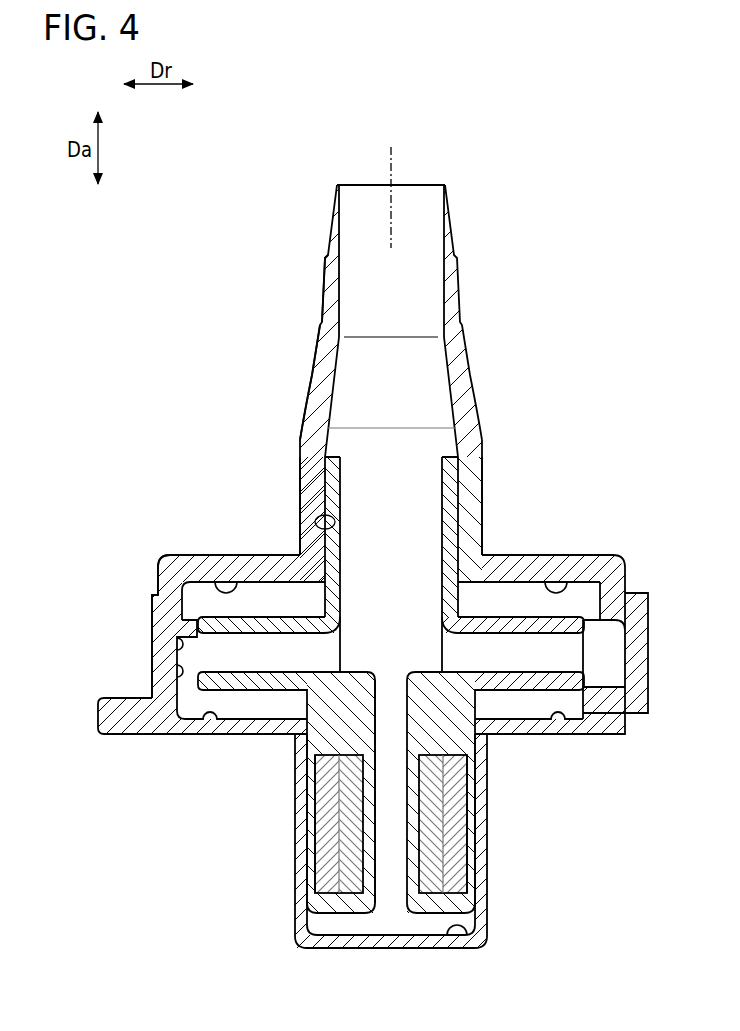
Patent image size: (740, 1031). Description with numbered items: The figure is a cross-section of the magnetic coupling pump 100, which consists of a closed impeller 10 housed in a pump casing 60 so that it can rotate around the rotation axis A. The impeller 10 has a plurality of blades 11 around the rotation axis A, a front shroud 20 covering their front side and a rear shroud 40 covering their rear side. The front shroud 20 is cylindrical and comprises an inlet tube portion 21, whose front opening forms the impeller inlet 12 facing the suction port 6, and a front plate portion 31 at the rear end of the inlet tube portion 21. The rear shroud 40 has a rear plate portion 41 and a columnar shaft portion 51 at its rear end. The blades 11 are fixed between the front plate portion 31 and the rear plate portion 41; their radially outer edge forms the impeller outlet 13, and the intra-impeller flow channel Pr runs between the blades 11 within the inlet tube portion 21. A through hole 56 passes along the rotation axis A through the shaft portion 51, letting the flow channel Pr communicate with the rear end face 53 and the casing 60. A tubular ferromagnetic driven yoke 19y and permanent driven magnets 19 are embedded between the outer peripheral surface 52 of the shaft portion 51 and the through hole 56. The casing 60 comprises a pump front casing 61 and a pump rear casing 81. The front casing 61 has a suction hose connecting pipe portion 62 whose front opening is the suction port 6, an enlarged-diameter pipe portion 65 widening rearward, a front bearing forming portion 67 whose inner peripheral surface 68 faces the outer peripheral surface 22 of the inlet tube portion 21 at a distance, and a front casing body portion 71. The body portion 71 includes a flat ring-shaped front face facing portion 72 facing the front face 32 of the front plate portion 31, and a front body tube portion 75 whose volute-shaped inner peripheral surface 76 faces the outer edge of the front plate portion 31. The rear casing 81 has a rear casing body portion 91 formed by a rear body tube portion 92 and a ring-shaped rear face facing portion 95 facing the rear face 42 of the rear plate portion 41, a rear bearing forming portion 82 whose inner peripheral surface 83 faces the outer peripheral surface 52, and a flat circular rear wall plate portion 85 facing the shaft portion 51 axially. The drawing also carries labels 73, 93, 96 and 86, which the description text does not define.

The suction port 6 is at (338, 184).
The pump casing 60 is at (470, 243).
The suction hose connecting pipe portion 62 is at (330, 231).
The enlarged-diameter pipe portion 65 is at (323, 352).
The pump front casing 61 is at (305, 378).
The magnetic coupling pump 100 is at (528, 272).
The rotation axis A is at (392, 238).
The impeller inlet 12 is at (455, 402).
The front shroud 20 is at (577, 405).
The inlet tube portion 21 is at (488, 600).
The outer peripheral surface 22 is at (312, 465).
The front bearing forming portion 67 is at (307, 492).
The inner peripheral surface 68 is at (318, 528).
The front plate portion 31 is at (500, 615).
The front face 32 is at (512, 615).
The seal projection 73 is at (222, 581).
The closed impeller 10 is at (583, 611).
The front casing body portion 71 is at (90, 490).
The front face facing portion 72 is at (187, 557).
The front body tube portion 75 is at (157, 580).
The impeller outlet 13 is at (182, 621).
The inner peripheral surface 76 is at (176, 644).
The seal bead 93 is at (176, 671).
The rear casing body portion 91 is at (50, 670).
The rear body tube portion 92 is at (152, 676).
The rear face facing portion 95 is at (181, 735).
The seal bead 96 is at (210, 722).
The blades 11 is at (255, 660).
The intra-impeller flow channel Pr is at (290, 657).
The rear shroud 40 is at (578, 783).
The rear plate portion 41 is at (470, 707).
The rear face 42 is at (513, 683).
The shaft portion 51 is at (470, 778).
The outer peripheral surface 52 is at (462, 840).
The driven magnets 19 is at (352, 848).
The driven yoke 19y is at (327, 830).
The pump rear casing 81 is at (280, 935).
The rear bearing forming portion 82 is at (485, 895).
The inner peripheral surface 83 is at (473, 845).
The rear end face 53 is at (347, 909).
The through hole 56 is at (365, 858).
The rear wall plate portion 85 is at (436, 940).
The projection 86 is at (457, 922).